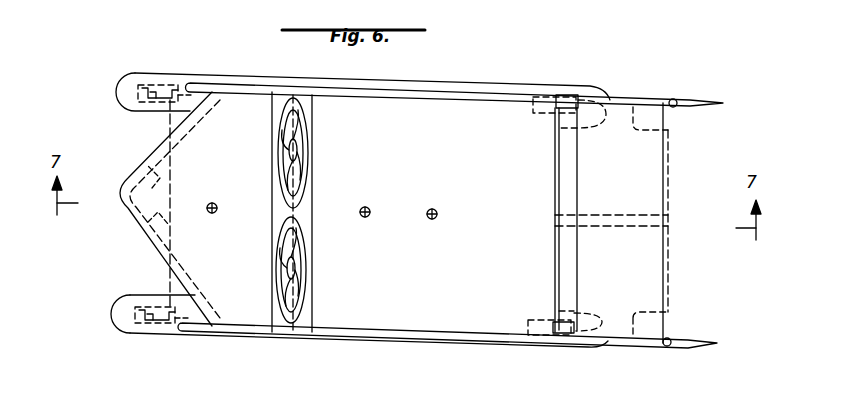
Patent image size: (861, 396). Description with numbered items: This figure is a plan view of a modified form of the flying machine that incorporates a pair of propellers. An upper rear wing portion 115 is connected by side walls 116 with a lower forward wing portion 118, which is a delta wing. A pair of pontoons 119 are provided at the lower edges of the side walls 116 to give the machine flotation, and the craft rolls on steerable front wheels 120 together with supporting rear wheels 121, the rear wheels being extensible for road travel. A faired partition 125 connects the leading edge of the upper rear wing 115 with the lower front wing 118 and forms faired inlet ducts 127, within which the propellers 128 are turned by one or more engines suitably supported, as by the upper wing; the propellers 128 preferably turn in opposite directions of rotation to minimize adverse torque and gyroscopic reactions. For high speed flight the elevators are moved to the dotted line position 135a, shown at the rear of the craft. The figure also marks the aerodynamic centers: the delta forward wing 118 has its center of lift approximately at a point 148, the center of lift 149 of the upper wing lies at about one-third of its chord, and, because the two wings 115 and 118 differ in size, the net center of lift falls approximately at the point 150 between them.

The upper rear wing portion 115 is at (487, 95).
The side walls 116 is at (282, 90).
The lower forward wing portion 118 is at (222, 271).
The pontoons 119 is at (160, 75).
The steerable front wheels 120 is at (142, 110).
The supporting rear wheels 121 is at (560, 95).
The faired partition 125 is at (274, 216).
The faired inlet ducts 127 is at (284, 141).
The propellers 128 is at (308, 143).
The dotted line position of elevators 135a is at (672, 142).
The center of lift of forward wing 148 is at (212, 200).
The center of lift of upper wing 149 is at (436, 210).
The net center of lift 150 is at (365, 205).